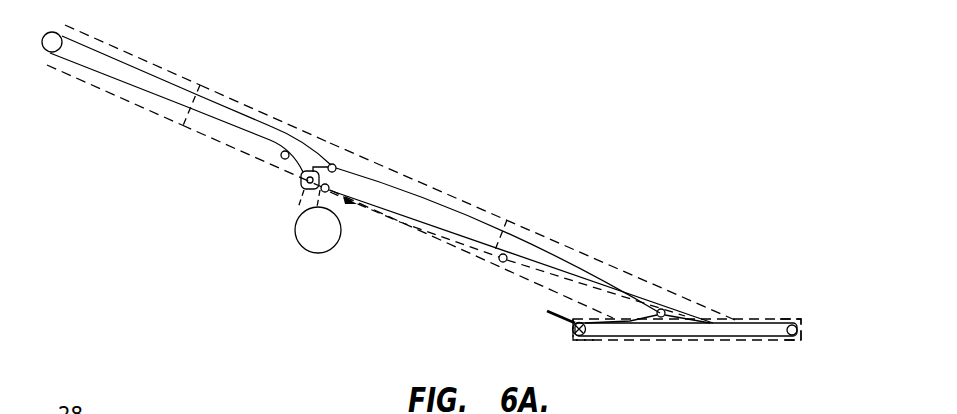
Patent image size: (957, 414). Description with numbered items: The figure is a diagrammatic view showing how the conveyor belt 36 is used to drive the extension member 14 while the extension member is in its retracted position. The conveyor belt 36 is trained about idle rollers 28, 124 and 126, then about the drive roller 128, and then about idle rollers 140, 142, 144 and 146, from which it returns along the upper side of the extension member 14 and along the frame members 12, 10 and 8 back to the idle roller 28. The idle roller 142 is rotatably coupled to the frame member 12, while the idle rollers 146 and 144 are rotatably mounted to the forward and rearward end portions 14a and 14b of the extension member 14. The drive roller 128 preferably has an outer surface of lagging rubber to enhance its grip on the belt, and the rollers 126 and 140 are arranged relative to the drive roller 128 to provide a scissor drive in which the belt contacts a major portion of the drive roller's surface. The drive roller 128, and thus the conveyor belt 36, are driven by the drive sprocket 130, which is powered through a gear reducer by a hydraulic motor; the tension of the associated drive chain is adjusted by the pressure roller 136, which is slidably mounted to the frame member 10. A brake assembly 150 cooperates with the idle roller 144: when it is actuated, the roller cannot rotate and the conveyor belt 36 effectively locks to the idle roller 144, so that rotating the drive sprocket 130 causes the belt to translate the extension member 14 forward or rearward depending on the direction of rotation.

The idle roller 28 is at (50, 38).
The frame member 8 is at (128, 53).
The frame member 10 is at (257, 111).
The frame member 12 is at (593, 261).
The extension member 14 is at (697, 343).
The forward end portion of extension member 14a is at (587, 343).
The rearward end portion of extension member 14b is at (789, 322).
The conveyor belt 36 is at (470, 212).
The idle roller 124 is at (281, 158).
The idle roller 126 is at (333, 164).
The drive roller 128 is at (301, 182).
The drive sprocket 130 is at (317, 253).
The pressure roller 136 is at (329, 186).
The idle roller 140 is at (503, 264).
The idle roller 142 is at (664, 310).
The idle roller 144 is at (575, 336).
The idle roller 146 is at (792, 337).
The brake assembly 150 is at (544, 312).